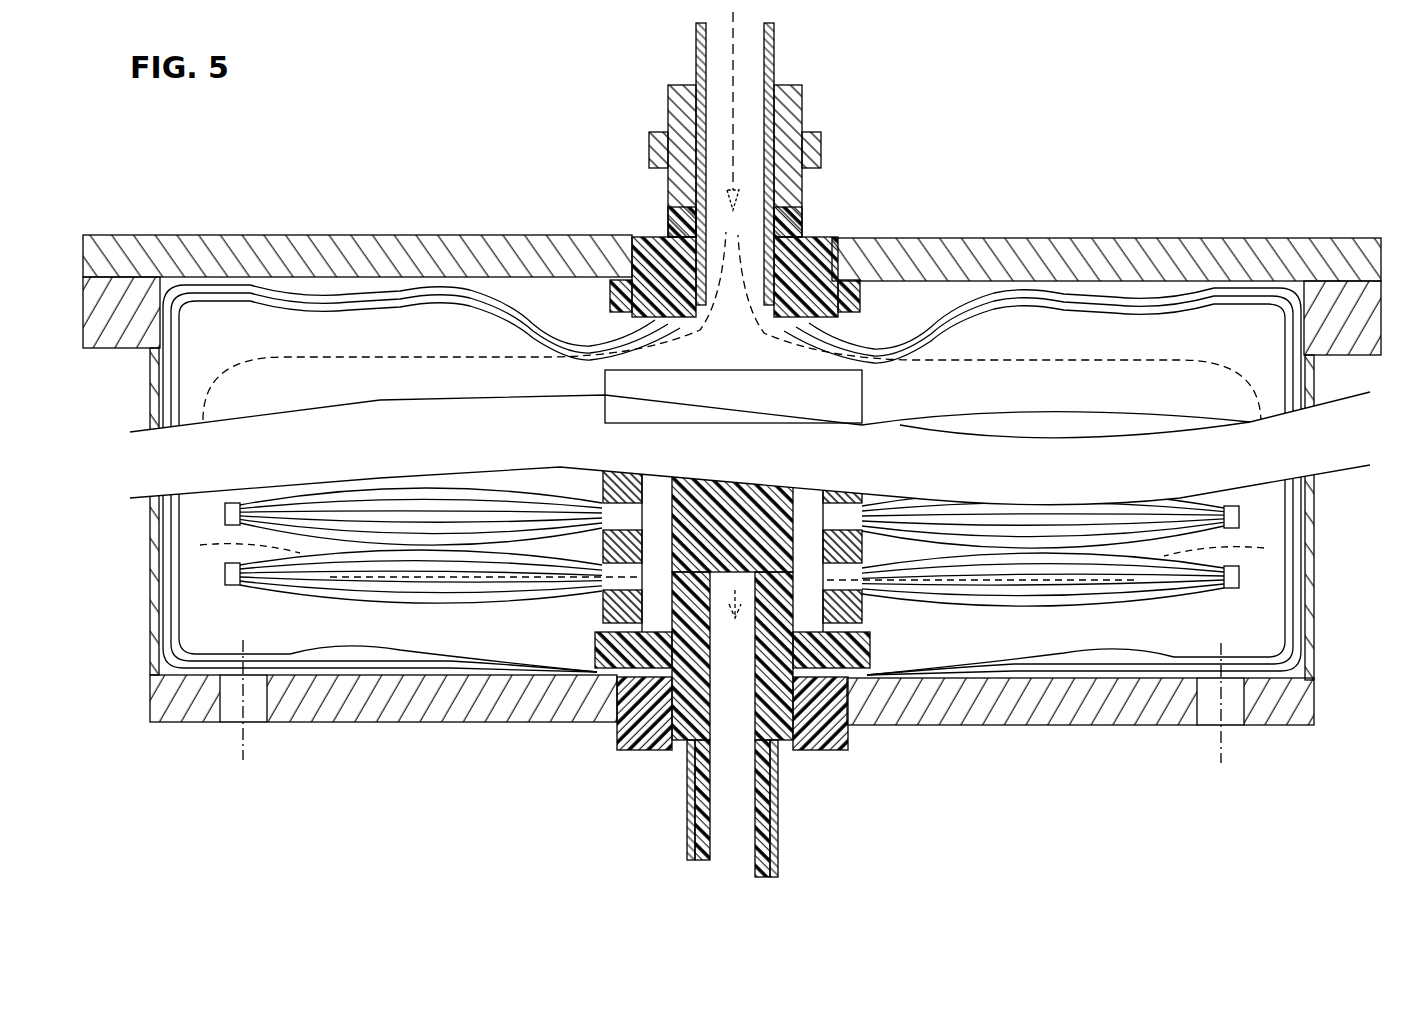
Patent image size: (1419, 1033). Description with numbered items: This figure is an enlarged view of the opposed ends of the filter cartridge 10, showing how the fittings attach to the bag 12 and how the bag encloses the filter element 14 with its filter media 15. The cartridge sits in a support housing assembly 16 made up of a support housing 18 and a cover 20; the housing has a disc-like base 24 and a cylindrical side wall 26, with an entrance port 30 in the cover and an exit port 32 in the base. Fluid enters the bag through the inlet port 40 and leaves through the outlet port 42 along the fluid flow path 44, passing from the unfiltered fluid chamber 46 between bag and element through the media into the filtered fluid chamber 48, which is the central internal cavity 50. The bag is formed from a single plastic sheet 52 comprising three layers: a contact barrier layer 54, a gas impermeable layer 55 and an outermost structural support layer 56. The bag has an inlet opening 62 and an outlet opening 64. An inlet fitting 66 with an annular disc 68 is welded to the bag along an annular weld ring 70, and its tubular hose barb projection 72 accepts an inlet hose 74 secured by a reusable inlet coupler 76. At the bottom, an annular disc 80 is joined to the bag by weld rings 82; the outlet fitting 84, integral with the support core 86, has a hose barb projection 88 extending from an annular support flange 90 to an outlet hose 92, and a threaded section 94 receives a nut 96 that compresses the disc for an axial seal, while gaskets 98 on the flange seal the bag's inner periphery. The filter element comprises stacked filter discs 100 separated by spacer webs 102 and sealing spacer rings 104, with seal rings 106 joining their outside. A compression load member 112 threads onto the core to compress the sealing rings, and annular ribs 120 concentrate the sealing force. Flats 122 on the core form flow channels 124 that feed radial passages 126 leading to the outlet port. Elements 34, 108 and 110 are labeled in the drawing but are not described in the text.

The filter cartridge 10 is at (218, 272).
The bag 12 is at (178, 275).
The filter element 14 is at (321, 680).
The filter media 15 is at (441, 497).
The support housing assembly 16 is at (1388, 277).
The support housing 18 is at (1363, 325).
The cover 20 is at (1320, 255).
The base 24 is at (1292, 728).
The cylindrical side wall 26 is at (1313, 670).
The entrance port 30 is at (858, 263).
The exit port 32 is at (603, 700).
The mounting axis 34 is at (1226, 740).
The inlet port 40 is at (695, 99).
The outlet port 42 is at (753, 877).
The fluid flow path 44 is at (1078, 357).
The unfiltered fluid chamber 46 is at (1165, 330).
The filtered fluid chamber 48 is at (657, 488).
The central internal cavity 50 is at (662, 492).
The sheet 52 is at (527, 284).
The contact barrier layer 54 is at (274, 300).
The gas impermeable layer 55 is at (312, 294).
The structural support layer 56 is at (347, 287).
The inlet opening 62 is at (625, 318).
The outlet opening 64 is at (575, 668).
The inlet fitting 66 is at (670, 215).
The annular disc 68 is at (940, 300).
The annular weld ring 70 is at (790, 255).
The tubular hose barb projection 72 is at (762, 237).
The inlet hose 74 is at (775, 75).
The reusable inlet coupler 76 is at (803, 146).
The annular disc 80 is at (508, 658).
The annular plastic weld rings 82 is at (470, 655).
The outlet fitting 84 is at (779, 773).
The support core 86 is at (808, 492).
The tubular hose barb projection 88 is at (722, 868).
The annular support flange 90 is at (880, 697).
The outlet hose 92 is at (780, 849).
The threaded section 94 is at (687, 712).
The nut 96 is at (617, 740).
The gaskets 98 is at (870, 670).
The filter discs 100 is at (250, 542).
The spacer webs 102 is at (378, 505).
The sealing spacer rings 104 is at (532, 547).
The seal rings 106 is at (233, 512).
The outer potting ring 108 is at (813, 493).
The central core 110 is at (737, 495).
The compression load member 112 is at (866, 400).
The annular rib 120 is at (878, 625).
The flats 122 is at (923, 514).
The flow channels 124 is at (987, 532).
The radial passages 126 is at (927, 598).